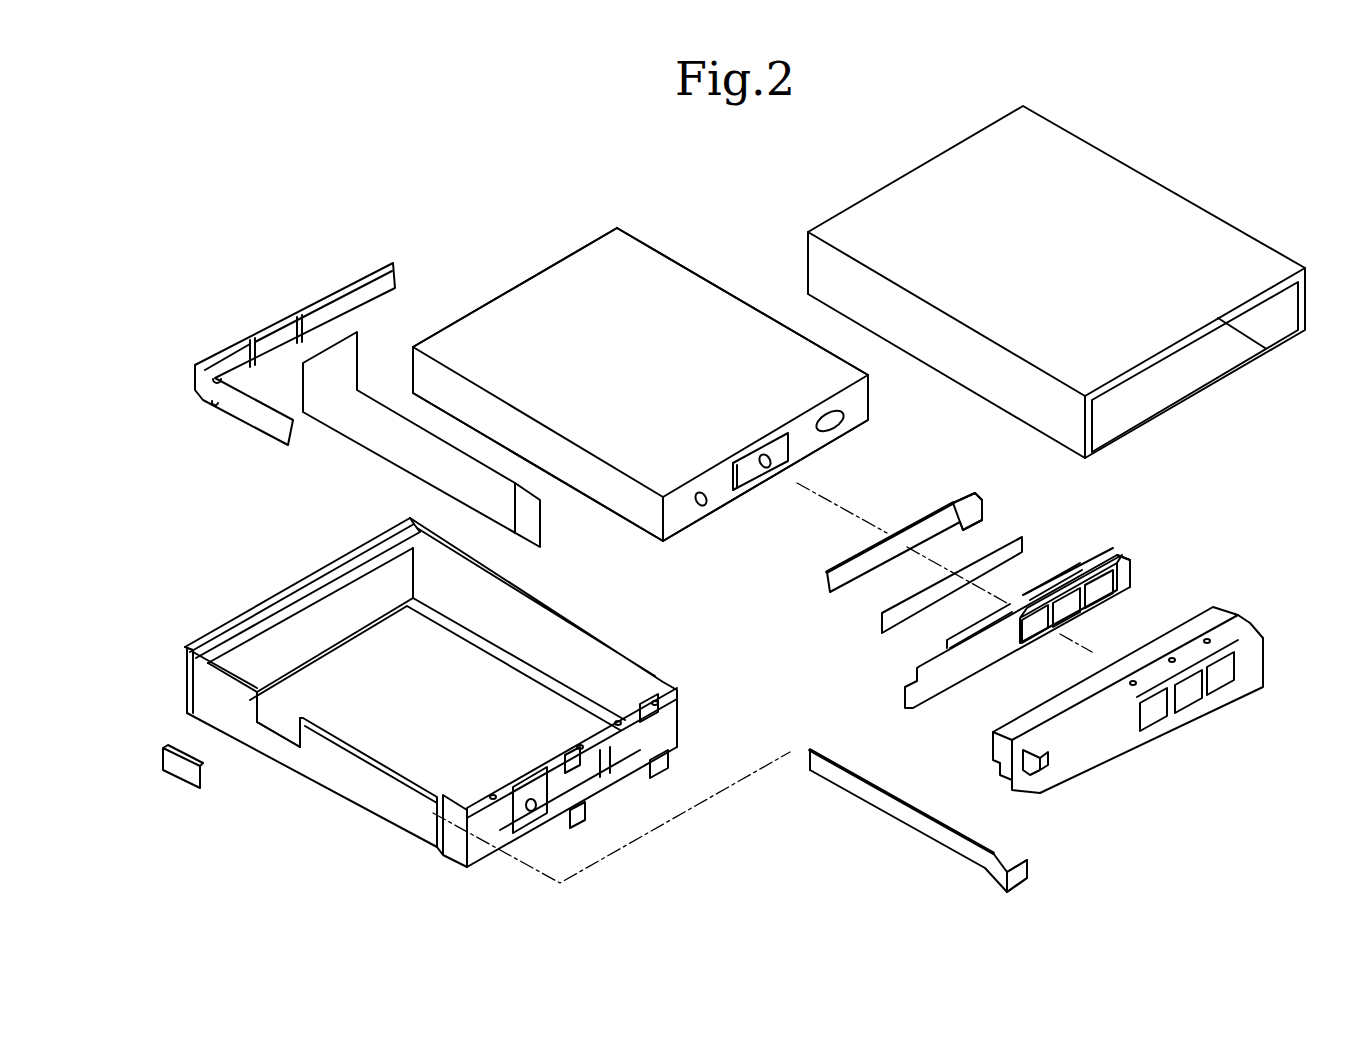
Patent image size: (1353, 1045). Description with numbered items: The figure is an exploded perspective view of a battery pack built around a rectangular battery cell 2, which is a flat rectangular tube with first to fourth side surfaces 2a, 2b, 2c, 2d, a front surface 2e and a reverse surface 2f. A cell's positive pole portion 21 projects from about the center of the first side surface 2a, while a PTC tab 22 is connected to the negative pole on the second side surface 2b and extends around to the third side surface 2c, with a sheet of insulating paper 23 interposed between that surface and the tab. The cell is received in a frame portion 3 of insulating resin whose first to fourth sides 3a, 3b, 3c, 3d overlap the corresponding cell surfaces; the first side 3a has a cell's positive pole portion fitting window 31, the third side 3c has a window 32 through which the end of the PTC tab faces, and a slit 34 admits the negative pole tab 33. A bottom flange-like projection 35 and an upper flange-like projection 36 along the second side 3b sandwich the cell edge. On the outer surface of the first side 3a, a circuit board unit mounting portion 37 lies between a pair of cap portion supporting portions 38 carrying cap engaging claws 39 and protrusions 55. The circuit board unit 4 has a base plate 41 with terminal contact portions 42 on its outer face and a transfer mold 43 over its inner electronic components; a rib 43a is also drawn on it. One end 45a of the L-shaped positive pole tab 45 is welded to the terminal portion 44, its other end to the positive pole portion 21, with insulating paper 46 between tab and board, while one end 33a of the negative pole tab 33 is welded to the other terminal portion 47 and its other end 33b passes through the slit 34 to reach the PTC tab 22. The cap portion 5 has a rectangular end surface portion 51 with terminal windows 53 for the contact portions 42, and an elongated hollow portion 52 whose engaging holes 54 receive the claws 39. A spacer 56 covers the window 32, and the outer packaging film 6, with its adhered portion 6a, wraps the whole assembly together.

The battery cell 2 is at (654, 240).
The first side surface 2a is at (858, 406).
The second side surface 2b is at (520, 285).
The third side surface 2c is at (632, 500).
The fourth side surface 2d is at (698, 277).
The front surface 2e is at (737, 328).
The reverse surface 2f is at (832, 434).
The cell's positive pole portion 21 is at (752, 478).
The PTC tab 22 is at (238, 358).
The insulating paper 23 is at (390, 455).
The frame portion 3 is at (487, 701).
The first side 3a is at (672, 728).
The second side 3b is at (330, 562).
The third side 3c is at (360, 785).
The fourth side 3d is at (650, 655).
The cell's positive pole portion fitting window 31 is at (560, 810).
The window 32 is at (282, 730).
The negative pole tab 33 is at (937, 824).
The one end of negative pole tab 33a is at (1025, 880).
The other end of negative pole tab 33b is at (825, 775).
The slit 34 is at (437, 820).
The flange-like projection 35 is at (277, 668).
The flange-like projection 36 is at (290, 607).
The circuit board unit mounting portion 37 is at (630, 760).
The cap portion supporting portions 38 is at (628, 770).
The cap engaging claws 39 is at (490, 793).
The circuit board unit 4 is at (994, 581).
The base plate 41 is at (1117, 548).
The terminal contact portions 42 is at (1100, 590).
The transfer mold 43 is at (1088, 548).
The rib 43a is at (1046, 578).
The terminal portion 44 is at (1143, 518).
The positive pole tab 45 is at (925, 507).
The one end of positive pole tab 45a is at (990, 497).
The insulating paper 46 is at (1000, 540).
The other terminal portion 47 is at (900, 690).
The cap portion 5 is at (1128, 690).
The rectangular end surface portion 51 is at (1090, 765).
The elongated hollow portion 52 is at (1090, 715).
The terminal windows 53 is at (1213, 680).
The engaging holes 54 is at (1207, 638).
The protrusions 55 is at (566, 755).
The spacer 56 is at (178, 776).
The outer packaging film 6 is at (1056, 282).
The adhered portion 6a is at (1276, 334).